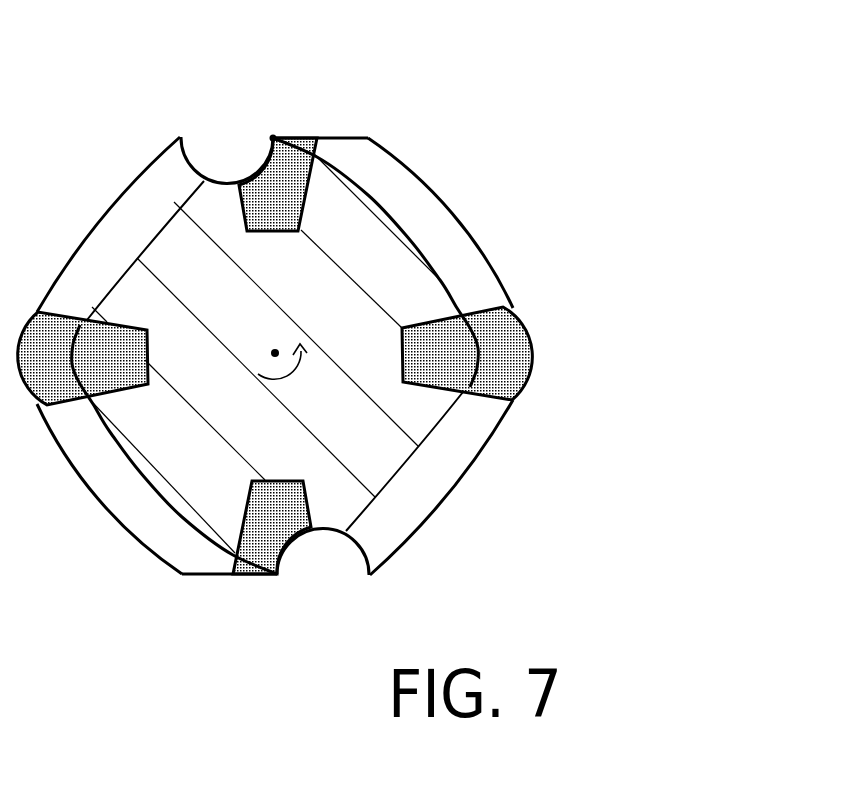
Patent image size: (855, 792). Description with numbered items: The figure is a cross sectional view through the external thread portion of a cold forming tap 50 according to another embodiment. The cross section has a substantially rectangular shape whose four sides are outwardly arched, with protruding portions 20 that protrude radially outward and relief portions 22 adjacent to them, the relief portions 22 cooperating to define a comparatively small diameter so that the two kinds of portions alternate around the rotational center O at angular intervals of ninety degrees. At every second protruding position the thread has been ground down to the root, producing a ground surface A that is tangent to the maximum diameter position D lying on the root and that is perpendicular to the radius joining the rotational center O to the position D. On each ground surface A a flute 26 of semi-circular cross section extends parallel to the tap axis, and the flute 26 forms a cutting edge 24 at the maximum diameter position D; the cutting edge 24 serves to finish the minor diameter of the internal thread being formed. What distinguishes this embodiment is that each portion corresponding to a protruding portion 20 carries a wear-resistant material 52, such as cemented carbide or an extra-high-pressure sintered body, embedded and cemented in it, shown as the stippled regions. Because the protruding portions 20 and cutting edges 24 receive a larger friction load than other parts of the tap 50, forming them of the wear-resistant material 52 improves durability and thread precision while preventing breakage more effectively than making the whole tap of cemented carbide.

The cold forming tap 50 is at (597, 152).
The protruding portion 20 is at (568, 345).
The relief portion 22 is at (490, 496).
The cutting edge 24 is at (277, 577).
The flute 26 is at (330, 530).
The wear-resistant material 52 is at (447, 372).
The ground surface A is at (217, 575).
The maximum diameter position D is at (270, 138).
The rotational center O is at (278, 351).